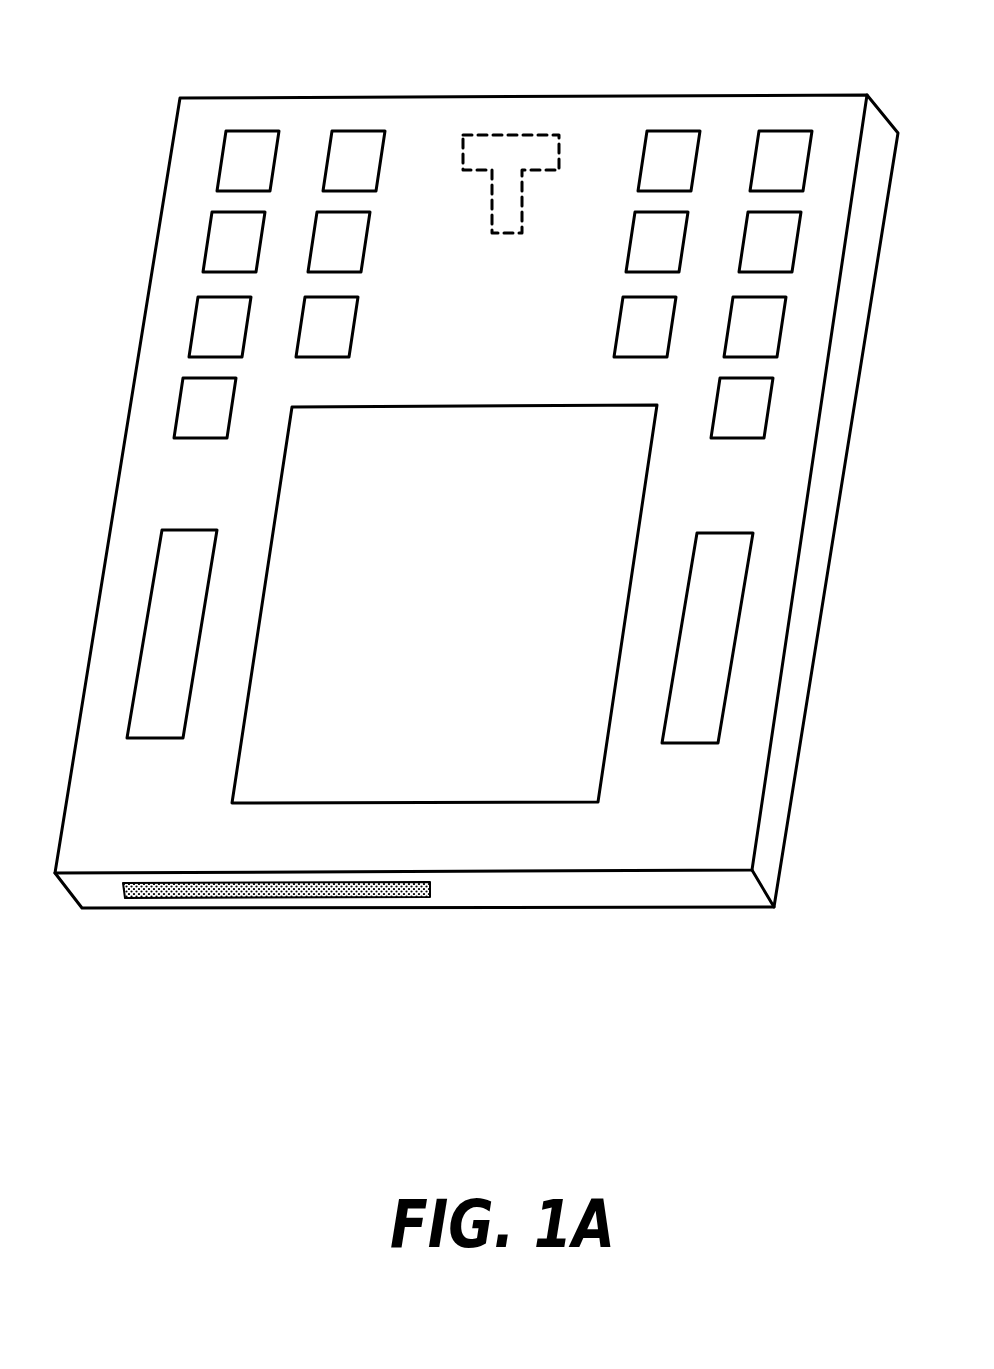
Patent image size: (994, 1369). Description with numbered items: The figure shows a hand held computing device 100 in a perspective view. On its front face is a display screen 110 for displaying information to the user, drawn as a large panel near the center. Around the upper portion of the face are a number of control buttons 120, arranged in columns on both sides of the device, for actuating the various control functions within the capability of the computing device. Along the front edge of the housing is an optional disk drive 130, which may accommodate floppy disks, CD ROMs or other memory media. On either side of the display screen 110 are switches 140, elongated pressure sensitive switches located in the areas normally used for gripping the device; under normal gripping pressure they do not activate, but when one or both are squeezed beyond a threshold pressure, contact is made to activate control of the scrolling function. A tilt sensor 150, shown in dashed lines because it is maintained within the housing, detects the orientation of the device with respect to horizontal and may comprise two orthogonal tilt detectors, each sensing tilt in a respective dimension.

The hand held computing device 100 is at (437, 97).
The display screen 110 is at (525, 406).
The control buttons 120 is at (356, 323).
The disk drive 130 is at (345, 910).
The switches 140 is at (153, 582).
The tilt sensor 150 is at (518, 128).